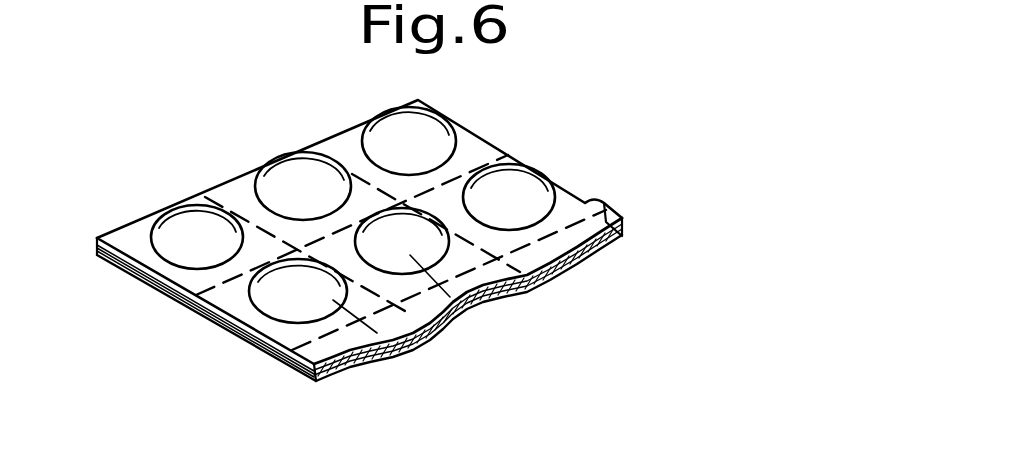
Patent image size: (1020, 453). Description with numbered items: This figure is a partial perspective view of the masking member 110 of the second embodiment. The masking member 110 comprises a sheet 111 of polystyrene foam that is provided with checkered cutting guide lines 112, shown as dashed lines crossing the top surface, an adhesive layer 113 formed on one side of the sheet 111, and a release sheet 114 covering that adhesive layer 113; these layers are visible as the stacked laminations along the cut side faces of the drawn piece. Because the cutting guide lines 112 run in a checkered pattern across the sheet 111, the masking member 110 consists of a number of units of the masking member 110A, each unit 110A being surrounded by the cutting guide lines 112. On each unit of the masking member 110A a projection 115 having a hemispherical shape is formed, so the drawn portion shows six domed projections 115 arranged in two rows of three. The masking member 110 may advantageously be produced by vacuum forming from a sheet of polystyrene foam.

The masking member 110 is at (386, 248).
The unit of the masking member 110A is at (642, 199).
The sheet 111 is at (180, 295).
The cutting guide lines 112 is at (268, 232).
The adhesive layer 113 is at (297, 370).
The release sheet 114 is at (353, 368).
The projection 115 is at (169, 228).